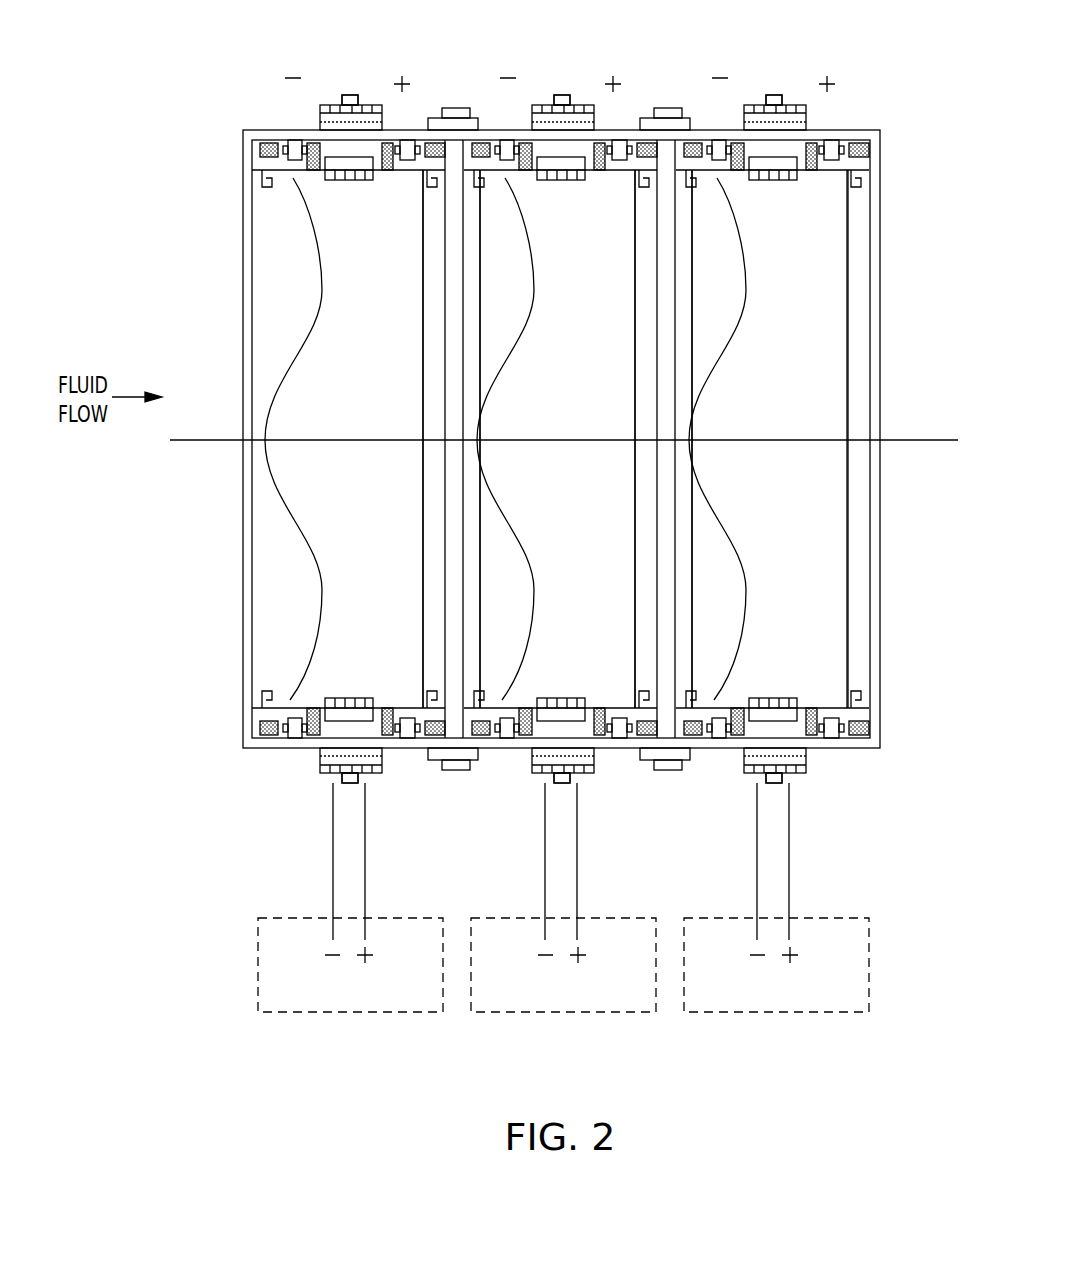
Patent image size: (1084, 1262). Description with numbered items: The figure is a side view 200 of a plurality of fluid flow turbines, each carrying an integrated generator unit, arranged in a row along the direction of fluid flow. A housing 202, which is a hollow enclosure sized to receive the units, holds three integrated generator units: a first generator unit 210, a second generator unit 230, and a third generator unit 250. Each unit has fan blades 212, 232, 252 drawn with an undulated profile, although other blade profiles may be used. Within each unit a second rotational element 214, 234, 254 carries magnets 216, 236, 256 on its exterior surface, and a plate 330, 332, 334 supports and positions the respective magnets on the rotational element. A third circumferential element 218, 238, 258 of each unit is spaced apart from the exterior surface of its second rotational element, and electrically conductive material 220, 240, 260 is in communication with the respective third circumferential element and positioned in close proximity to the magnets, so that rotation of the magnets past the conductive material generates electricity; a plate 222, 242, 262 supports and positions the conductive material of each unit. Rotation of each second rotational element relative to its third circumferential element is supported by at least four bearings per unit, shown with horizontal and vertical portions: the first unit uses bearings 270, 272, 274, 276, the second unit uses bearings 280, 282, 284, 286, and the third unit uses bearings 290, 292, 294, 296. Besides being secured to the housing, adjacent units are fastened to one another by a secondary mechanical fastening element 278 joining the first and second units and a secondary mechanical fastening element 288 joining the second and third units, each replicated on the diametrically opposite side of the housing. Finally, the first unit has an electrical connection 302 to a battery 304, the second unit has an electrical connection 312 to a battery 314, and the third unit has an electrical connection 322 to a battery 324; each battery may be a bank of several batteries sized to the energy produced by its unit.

The side view 200 is at (78, 908).
The housing 202 is at (243, 665).
The first generator unit 210 is at (355, 668).
The fan blades 212 is at (250, 640).
The second rotational element 214 is at (285, 725).
The magnets 216 is at (318, 160).
The third circumferential element 218 is at (265, 140).
The electrically conductive material 220 is at (326, 112).
The plate 222 is at (366, 100).
The second generator unit 230 is at (612, 439).
The fan blades 232 is at (502, 439).
The second rotational element 234 is at (488, 756).
The magnets 236 is at (519, 442).
The third circumferential element 238 is at (530, 192).
The electrically conductive material 240 is at (578, 444).
The plate 242 is at (558, 439).
The third generator unit 250 is at (797, 439).
The fan blades 252 is at (713, 439).
The second rotational element 254 is at (772, 756).
The magnets 256 is at (731, 442).
The third circumferential element 258 is at (739, 192).
The electrically conductive material 260 is at (763, 457).
The plate 262 is at (793, 434).
The bearing 270 is at (308, 162).
The bearing 272 is at (428, 150).
The bearing 274 is at (300, 720).
The bearing 276 is at (422, 725).
The secondary mechanical fastening element 278 is at (452, 110).
The bearing 280 is at (558, 131).
The bearing 282 is at (625, 129).
The bearing 284 is at (560, 693).
The bearing 286 is at (625, 751).
The secondary mechanical fastening element 288 is at (653, 399).
The bearing 290 is at (772, 192).
The bearing 292 is at (837, 129).
The bearing 294 is at (769, 743).
The bearing 296 is at (851, 751).
The electrical connection 302 is at (362, 905).
The battery 304 is at (341, 1017).
The electrical connection 312 is at (574, 905).
The battery 314 is at (553, 1017).
The electrical connection 322 is at (786, 893).
The battery 324 is at (765, 1017).
The plate 330 is at (350, 185).
The plate 332 is at (574, 439).
The plate 334 is at (788, 439).